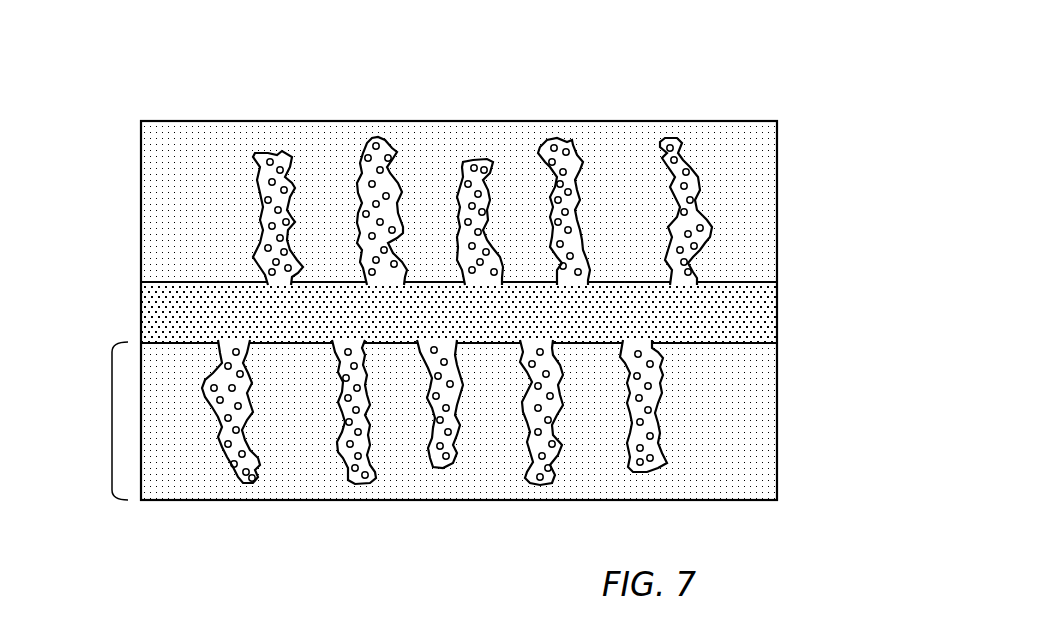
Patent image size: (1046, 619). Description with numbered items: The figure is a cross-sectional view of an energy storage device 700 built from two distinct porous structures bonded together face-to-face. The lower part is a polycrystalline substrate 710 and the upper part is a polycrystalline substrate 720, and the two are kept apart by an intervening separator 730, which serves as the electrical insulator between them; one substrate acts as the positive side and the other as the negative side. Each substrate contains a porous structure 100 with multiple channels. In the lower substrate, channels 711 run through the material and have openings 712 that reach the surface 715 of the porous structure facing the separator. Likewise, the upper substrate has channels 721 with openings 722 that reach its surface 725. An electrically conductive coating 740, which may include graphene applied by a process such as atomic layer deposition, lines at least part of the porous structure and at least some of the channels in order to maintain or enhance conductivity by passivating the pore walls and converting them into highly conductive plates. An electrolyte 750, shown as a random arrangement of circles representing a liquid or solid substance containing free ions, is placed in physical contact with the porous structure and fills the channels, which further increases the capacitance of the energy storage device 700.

The energy storage device 700 is at (764, 88).
The polycrystalline substrate 720 is at (213, 164).
The surface 725 is at (161, 270).
The openings 722 is at (278, 292).
The channels 721 is at (377, 137).
The electrolyte 750 is at (567, 137).
The electrically conductive coating 740 is at (682, 168).
The separator 730 is at (752, 320).
The openings 712 is at (542, 334).
The surface 715 is at (692, 356).
The polycrystalline substrate 710 is at (213, 487).
The channels 711 is at (347, 475).
The porous structure 100 is at (100, 418).